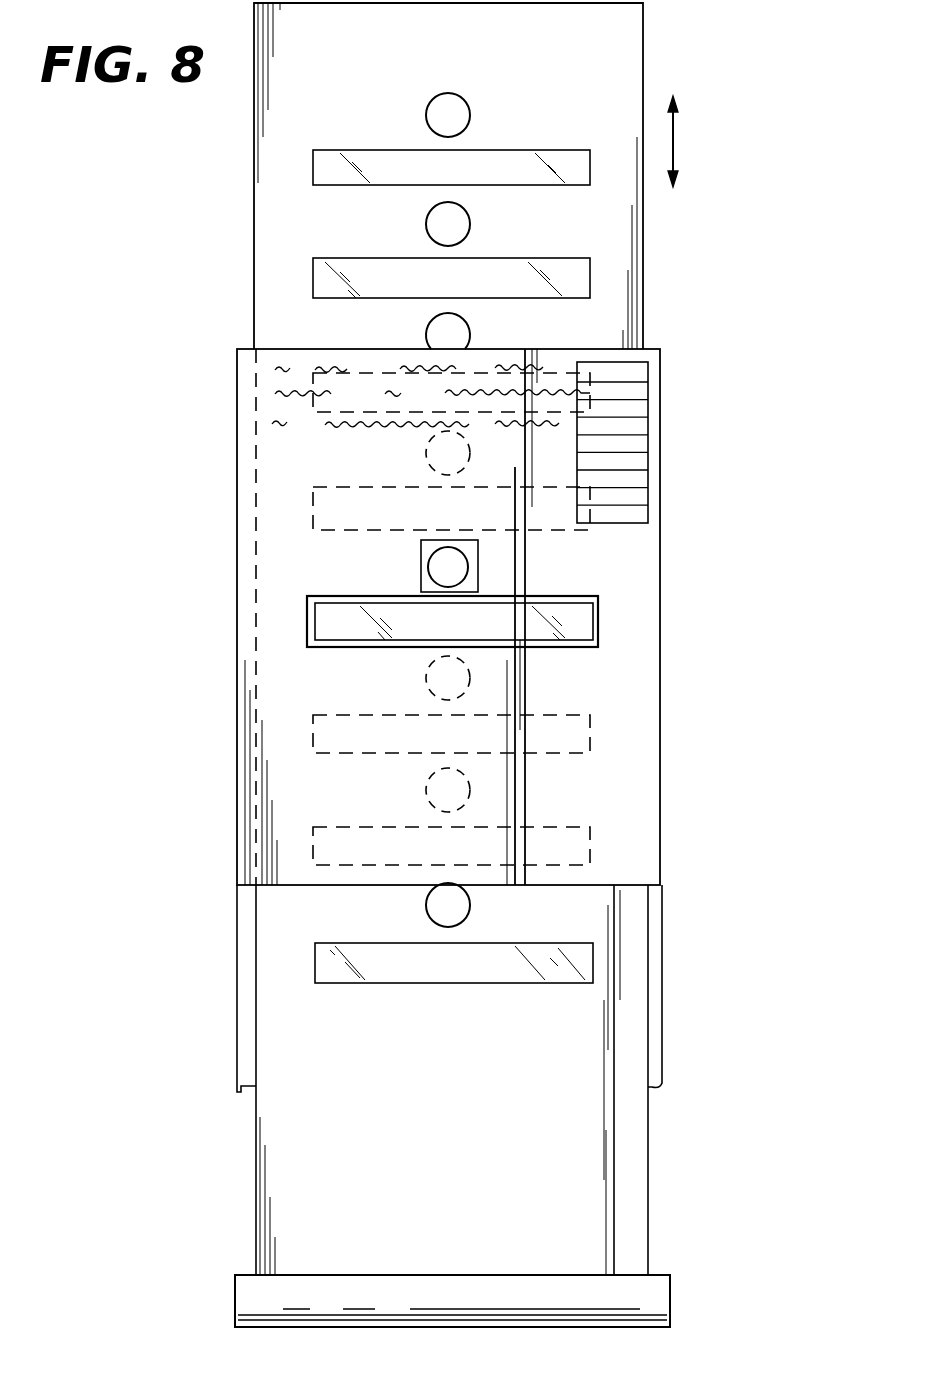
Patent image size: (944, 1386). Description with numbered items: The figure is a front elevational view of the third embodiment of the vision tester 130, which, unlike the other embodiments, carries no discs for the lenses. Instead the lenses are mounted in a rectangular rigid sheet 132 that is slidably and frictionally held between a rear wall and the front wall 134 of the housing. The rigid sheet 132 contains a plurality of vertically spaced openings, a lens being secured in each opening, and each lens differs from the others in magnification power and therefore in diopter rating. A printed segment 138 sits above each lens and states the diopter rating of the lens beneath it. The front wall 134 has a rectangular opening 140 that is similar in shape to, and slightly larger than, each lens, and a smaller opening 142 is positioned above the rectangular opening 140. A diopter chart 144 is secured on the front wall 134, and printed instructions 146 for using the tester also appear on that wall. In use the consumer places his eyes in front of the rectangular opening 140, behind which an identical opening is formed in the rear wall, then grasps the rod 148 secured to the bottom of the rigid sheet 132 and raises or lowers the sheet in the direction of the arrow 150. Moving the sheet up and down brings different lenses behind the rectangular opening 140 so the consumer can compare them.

The vision tester 130 is at (658, 298).
The rigid sheet 132 is at (598, 78).
The front wall 134 is at (628, 702).
The printed segment 138 is at (448, 93).
The rectangular opening 140 is at (514, 603).
The smaller opening 142 is at (421, 545).
The diopter chart 144 is at (648, 494).
The printed instructions 146 is at (274, 386).
The rod 148 is at (663, 1302).
The arrow 150 is at (674, 146).